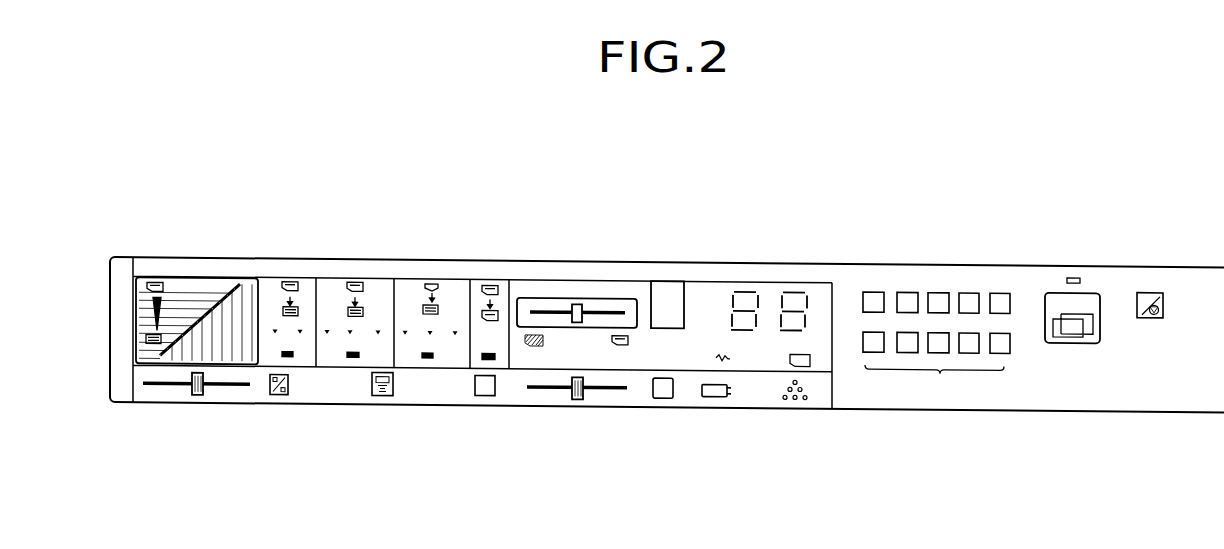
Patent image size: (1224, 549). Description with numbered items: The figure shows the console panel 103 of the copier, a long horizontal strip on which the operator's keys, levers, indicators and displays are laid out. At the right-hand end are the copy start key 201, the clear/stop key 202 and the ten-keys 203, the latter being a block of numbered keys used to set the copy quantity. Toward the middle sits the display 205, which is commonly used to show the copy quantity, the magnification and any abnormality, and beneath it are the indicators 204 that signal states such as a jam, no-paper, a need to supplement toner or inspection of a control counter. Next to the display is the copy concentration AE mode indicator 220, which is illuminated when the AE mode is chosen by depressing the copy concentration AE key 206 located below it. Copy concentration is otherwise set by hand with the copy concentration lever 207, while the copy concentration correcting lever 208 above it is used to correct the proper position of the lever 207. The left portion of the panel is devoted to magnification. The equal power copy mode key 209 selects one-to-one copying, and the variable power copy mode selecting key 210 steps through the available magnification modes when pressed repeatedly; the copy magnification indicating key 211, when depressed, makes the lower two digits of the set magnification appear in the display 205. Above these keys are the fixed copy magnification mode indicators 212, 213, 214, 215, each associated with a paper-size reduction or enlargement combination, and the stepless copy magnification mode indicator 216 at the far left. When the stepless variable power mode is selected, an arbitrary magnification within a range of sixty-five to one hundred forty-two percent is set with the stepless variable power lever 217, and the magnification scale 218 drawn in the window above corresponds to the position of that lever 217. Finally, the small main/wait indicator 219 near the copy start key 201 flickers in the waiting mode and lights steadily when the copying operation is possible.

The console panel 103 is at (452, 261).
The copy start key 201 is at (1090, 297).
The clear/stop key 202 is at (1152, 292).
The ten-keys 203 is at (941, 375).
The indicators 204 is at (708, 419).
The display 205 is at (777, 285).
The copy concentration AE key 206 is at (663, 394).
The copy concentration lever 207 is at (578, 396).
The copy concentration correcting lever 208 is at (578, 303).
The equal power copy mode key 209 is at (485, 393).
The variable power copy mode selecting key 210 is at (383, 395).
The copy magnification indicating key 211 is at (272, 395).
The fixed copy magnification mode indicator 212 is at (491, 358).
The fixed copy magnification mode indicator 213 is at (428, 358).
The fixed copy magnification mode indicator 214 is at (353, 358).
The fixed copy magnification mode indicator 215 is at (288, 358).
The stepless copy magnification mode indicator 216 is at (133, 270).
The stepless variable power lever 217 is at (197, 396).
The magnification scale 218 is at (200, 300).
The main/wait indicator 219 is at (1070, 268).
The copy concentration AE mode indicator 220 is at (670, 280).